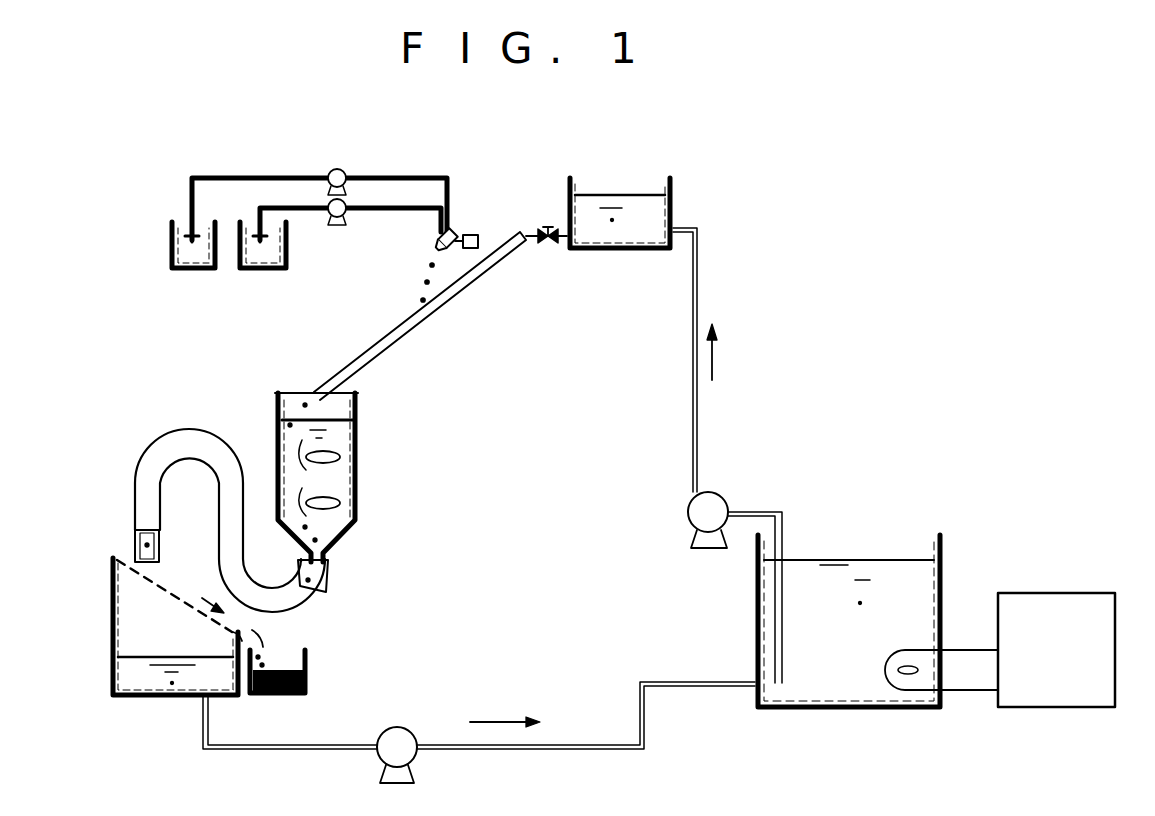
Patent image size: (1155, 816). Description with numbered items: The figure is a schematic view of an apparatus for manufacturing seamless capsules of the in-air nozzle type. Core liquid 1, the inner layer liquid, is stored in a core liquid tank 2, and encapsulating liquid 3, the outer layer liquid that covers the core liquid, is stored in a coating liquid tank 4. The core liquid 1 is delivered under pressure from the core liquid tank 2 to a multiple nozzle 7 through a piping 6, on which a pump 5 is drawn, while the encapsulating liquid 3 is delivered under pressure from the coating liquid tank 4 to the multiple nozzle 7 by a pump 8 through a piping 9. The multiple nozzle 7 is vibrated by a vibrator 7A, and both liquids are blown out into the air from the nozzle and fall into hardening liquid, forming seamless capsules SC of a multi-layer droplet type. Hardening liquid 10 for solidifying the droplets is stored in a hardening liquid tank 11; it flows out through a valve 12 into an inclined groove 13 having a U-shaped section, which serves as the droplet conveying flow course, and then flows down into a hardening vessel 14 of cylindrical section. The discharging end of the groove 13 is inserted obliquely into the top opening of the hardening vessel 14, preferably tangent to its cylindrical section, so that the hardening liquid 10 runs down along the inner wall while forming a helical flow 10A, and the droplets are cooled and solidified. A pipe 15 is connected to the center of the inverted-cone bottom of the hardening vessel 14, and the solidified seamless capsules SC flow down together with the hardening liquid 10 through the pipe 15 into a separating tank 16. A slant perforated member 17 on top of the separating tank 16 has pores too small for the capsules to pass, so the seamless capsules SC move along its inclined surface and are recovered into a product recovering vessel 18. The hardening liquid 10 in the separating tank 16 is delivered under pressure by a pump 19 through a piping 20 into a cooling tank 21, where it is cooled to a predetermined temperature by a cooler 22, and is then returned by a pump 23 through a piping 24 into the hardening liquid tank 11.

The core liquid 1 is at (188, 250).
The core liquid tank 2 is at (170, 225).
The encapsulating liquid 3 is at (262, 250).
The coating liquid tank 4 is at (287, 270).
The first pump 5 is at (332, 172).
The piping 6 is at (259, 177).
The multiple nozzle 7 is at (453, 230).
The vibrator 7A is at (478, 237).
The pump 8 is at (336, 220).
The piping 9 is at (398, 211).
The hardening liquid 10 is at (638, 196).
The helical flow 10A is at (345, 505).
The hardening liquid tank 11 is at (673, 203).
The valve 12 is at (548, 245).
The inclined groove having U-shaped section 13 is at (443, 302).
The hardening vessel 14 is at (358, 475).
The pipe 15 is at (138, 462).
The separating tank 16 is at (112, 640).
The slant perforated member 17 is at (188, 605).
The product recovering vessel 18 is at (307, 672).
The pump 19 is at (400, 727).
The piping 20 is at (592, 744).
The cooling tank 21 is at (897, 712).
The cooler 22 is at (1060, 598).
The pump 23 is at (688, 512).
The piping 24 is at (703, 436).
The seamless capsules SC is at (290, 424).